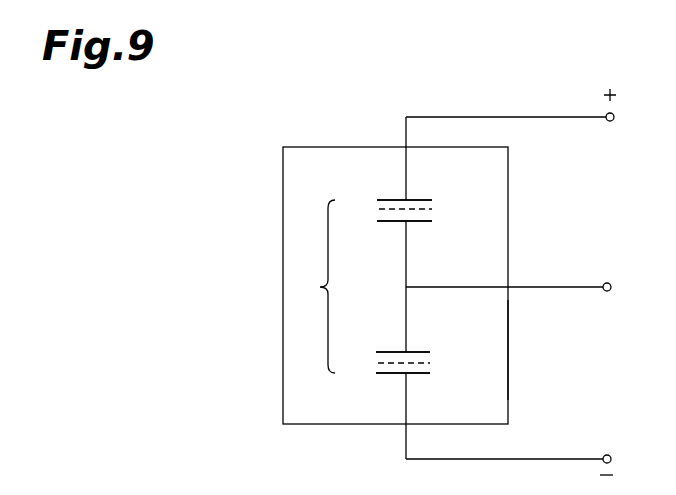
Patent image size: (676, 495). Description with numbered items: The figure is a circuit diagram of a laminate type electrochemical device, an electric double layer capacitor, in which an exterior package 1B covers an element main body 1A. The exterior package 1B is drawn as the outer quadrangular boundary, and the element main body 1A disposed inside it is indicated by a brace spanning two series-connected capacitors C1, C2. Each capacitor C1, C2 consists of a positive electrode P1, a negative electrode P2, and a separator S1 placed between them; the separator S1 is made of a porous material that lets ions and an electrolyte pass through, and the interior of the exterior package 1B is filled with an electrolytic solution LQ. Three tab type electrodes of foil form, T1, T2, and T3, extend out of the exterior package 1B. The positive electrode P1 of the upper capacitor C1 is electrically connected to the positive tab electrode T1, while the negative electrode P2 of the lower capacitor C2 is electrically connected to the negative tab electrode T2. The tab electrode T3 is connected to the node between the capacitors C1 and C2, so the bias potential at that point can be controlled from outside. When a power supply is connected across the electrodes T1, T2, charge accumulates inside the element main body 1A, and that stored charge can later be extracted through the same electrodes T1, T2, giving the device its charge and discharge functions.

The tab type electrode (positive electrode) T1 is at (527, 110).
The tab type electrode (negative electrode) T2 is at (526, 460).
The tab type electrode T3 is at (526, 288).
The electrolytic solution LQ is at (493, 199).
The element main body 1A is at (311, 286).
The exterior package 1B is at (508, 348).
The capacitor C1 is at (387, 212).
The capacitor C2 is at (384, 364).
The separator S1 is at (392, 206).
The positive electrode P1 is at (422, 200).
The negative electrode P2 is at (415, 222).